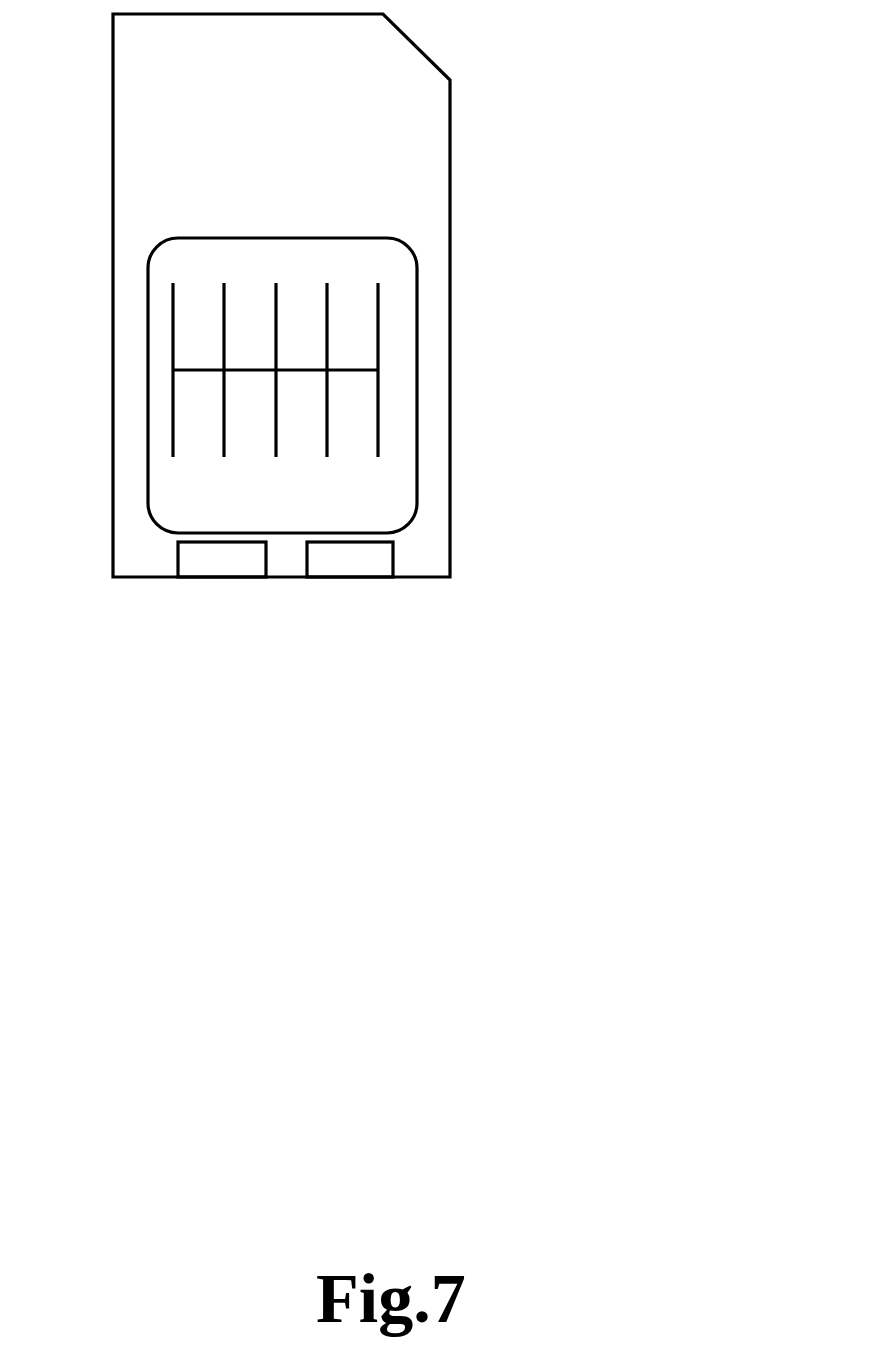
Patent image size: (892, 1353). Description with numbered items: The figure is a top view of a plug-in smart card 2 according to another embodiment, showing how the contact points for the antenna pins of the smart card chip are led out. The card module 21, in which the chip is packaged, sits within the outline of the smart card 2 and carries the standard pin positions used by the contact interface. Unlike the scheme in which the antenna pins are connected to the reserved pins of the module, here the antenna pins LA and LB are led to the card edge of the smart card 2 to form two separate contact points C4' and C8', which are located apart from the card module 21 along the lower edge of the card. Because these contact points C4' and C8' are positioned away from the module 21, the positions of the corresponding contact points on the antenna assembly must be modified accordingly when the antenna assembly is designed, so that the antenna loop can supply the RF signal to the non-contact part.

The smart card 2 is at (473, 93).
The card module 21 is at (383, 260).
The contact point C4' is at (155, 659).
The contact point C8' is at (427, 663).